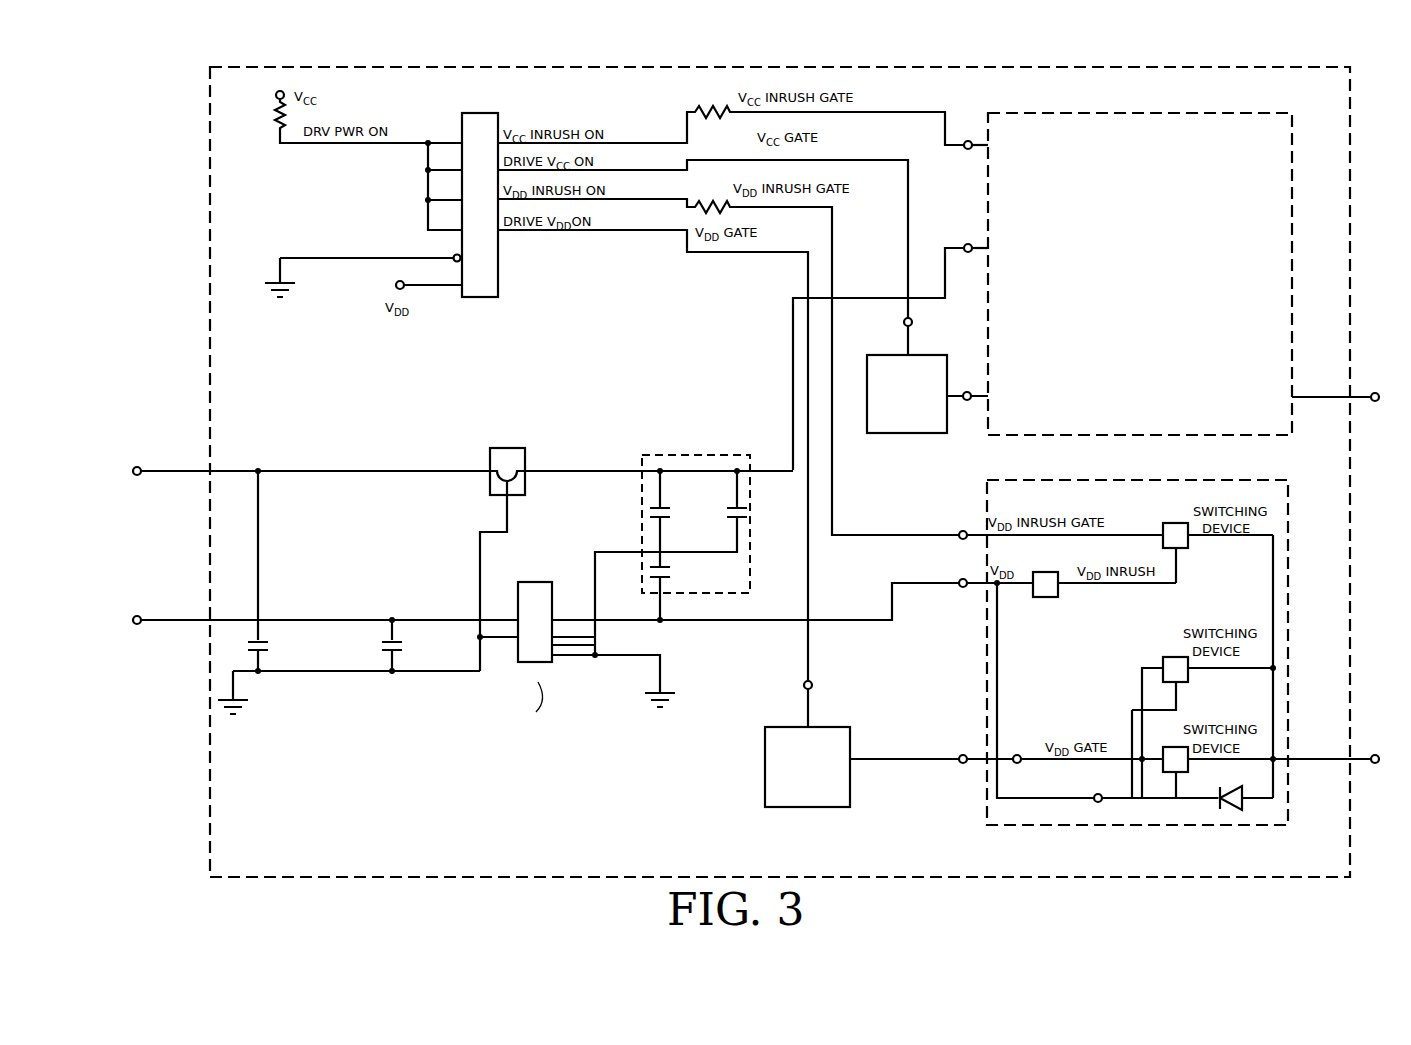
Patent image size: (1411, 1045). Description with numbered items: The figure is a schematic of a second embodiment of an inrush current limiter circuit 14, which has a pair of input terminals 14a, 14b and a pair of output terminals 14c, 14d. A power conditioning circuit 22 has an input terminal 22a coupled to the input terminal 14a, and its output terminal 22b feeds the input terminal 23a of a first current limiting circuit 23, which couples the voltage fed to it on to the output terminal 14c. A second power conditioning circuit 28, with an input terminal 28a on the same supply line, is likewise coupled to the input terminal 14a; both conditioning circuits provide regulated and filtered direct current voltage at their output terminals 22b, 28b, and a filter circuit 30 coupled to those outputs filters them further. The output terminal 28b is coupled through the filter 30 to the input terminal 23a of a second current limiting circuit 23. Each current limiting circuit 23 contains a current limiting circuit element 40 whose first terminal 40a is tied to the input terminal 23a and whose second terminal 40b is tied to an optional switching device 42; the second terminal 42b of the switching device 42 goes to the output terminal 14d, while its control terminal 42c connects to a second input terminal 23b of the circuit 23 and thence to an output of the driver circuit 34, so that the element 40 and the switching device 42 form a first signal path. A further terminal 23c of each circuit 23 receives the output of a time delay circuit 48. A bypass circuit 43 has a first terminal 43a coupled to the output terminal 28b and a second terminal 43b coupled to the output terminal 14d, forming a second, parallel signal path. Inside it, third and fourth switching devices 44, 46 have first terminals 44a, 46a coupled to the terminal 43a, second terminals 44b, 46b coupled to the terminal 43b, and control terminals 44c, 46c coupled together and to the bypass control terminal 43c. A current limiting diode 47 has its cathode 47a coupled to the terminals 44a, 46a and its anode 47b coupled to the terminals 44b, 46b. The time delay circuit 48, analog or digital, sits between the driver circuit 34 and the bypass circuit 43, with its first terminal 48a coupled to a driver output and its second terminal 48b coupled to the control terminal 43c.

The current limiter circuit 14 is at (1358, 131).
The input terminal 14a is at (193, 469).
The input terminal 14b is at (193, 618).
The output terminal 14c is at (1346, 396).
The output terminal 14d is at (1353, 763).
The power conditioning circuit 22 is at (497, 448).
The input terminal 22a is at (368, 469).
The output terminal 22b is at (555, 470).
The current limiting circuit 23 is at (1078, 113).
The input terminal 23a is at (969, 243).
The second input terminal 23b is at (970, 140).
The terminal of current limiting circuit 23c is at (975, 405).
The second power conditioning circuit 28 is at (516, 582).
The input terminal 28a is at (455, 619).
The output terminal 28b is at (638, 626).
The filter circuit 30 is at (672, 455).
The driver circuit 34 is at (470, 113).
The current limiting circuit element 40 is at (1045, 572).
The first terminal 40a is at (1033, 578).
The second terminal 40b is at (1060, 590).
The switching device 42 is at (1180, 522).
The second terminal 42b is at (1196, 538).
The control terminal 42c is at (1150, 533).
The bypass circuit 43 is at (1128, 712).
The first terminal 43a is at (1100, 805).
The second terminal 43b is at (1276, 765).
The control terminal 43c is at (1018, 755).
The third switching device 44 is at (1170, 657).
The first terminal 44a is at (1178, 701).
The second terminal 44b is at (1215, 669).
The control terminal 44c is at (1160, 668).
The fourth switching device 46 is at (1172, 747).
The first terminal 46a is at (1172, 800).
The second terminal 46b is at (1190, 762).
The control terminal 46c is at (1160, 768).
The current limiting diode 47 is at (1232, 812).
The cathode 47a is at (1204, 800).
The anode 47b is at (1258, 800).
The time delay circuit 48 is at (897, 434).
The first terminal 48a is at (905, 346).
The second terminal 48b is at (950, 392).